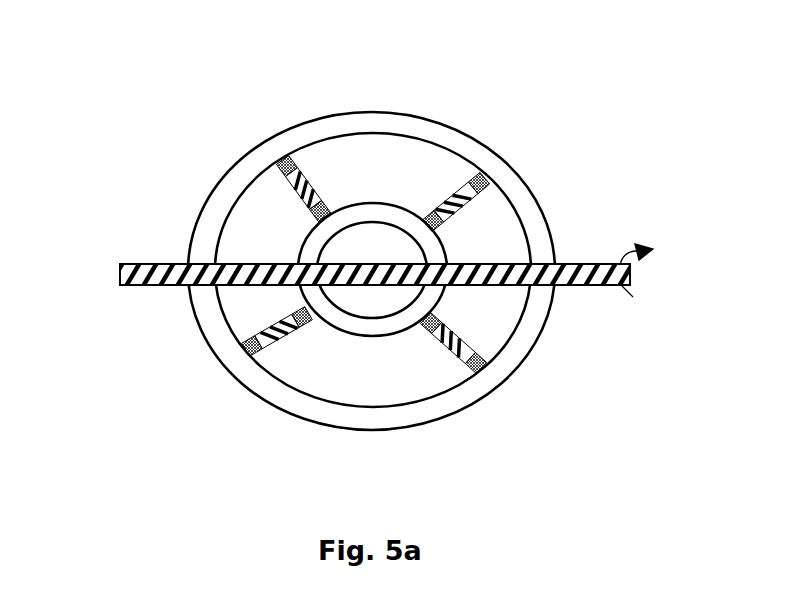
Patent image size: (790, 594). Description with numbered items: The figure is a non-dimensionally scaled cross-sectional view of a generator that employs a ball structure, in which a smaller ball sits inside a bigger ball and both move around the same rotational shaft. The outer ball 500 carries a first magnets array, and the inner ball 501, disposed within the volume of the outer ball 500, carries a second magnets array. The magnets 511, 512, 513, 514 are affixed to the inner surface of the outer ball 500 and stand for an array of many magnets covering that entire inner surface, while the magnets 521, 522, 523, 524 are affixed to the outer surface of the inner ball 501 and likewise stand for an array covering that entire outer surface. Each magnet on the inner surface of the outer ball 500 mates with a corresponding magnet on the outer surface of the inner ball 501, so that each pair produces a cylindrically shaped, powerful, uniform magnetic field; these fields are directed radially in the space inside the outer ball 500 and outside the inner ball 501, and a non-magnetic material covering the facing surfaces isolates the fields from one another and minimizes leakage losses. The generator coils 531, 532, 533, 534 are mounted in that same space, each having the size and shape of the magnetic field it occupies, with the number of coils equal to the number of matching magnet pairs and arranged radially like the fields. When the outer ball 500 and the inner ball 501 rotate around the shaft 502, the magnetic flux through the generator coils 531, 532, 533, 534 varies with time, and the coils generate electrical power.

The outer ball 500 is at (322, 116).
The inner ball 501 is at (297, 254).
The shaft 502 is at (120, 275).
The magnet 511 is at (529, 204).
The magnet 512 is at (223, 175).
The magnet 513 is at (210, 380).
The magnet 514 is at (526, 360).
The magnet 521 is at (447, 228).
The magnet 522 is at (312, 217).
The magnet 523 is at (298, 327).
The magnet 524 is at (434, 316).
The generator coil 531 is at (447, 200).
The generator coil 532 is at (298, 182).
The generator coil 533 is at (283, 330).
The generator coil 534 is at (450, 340).